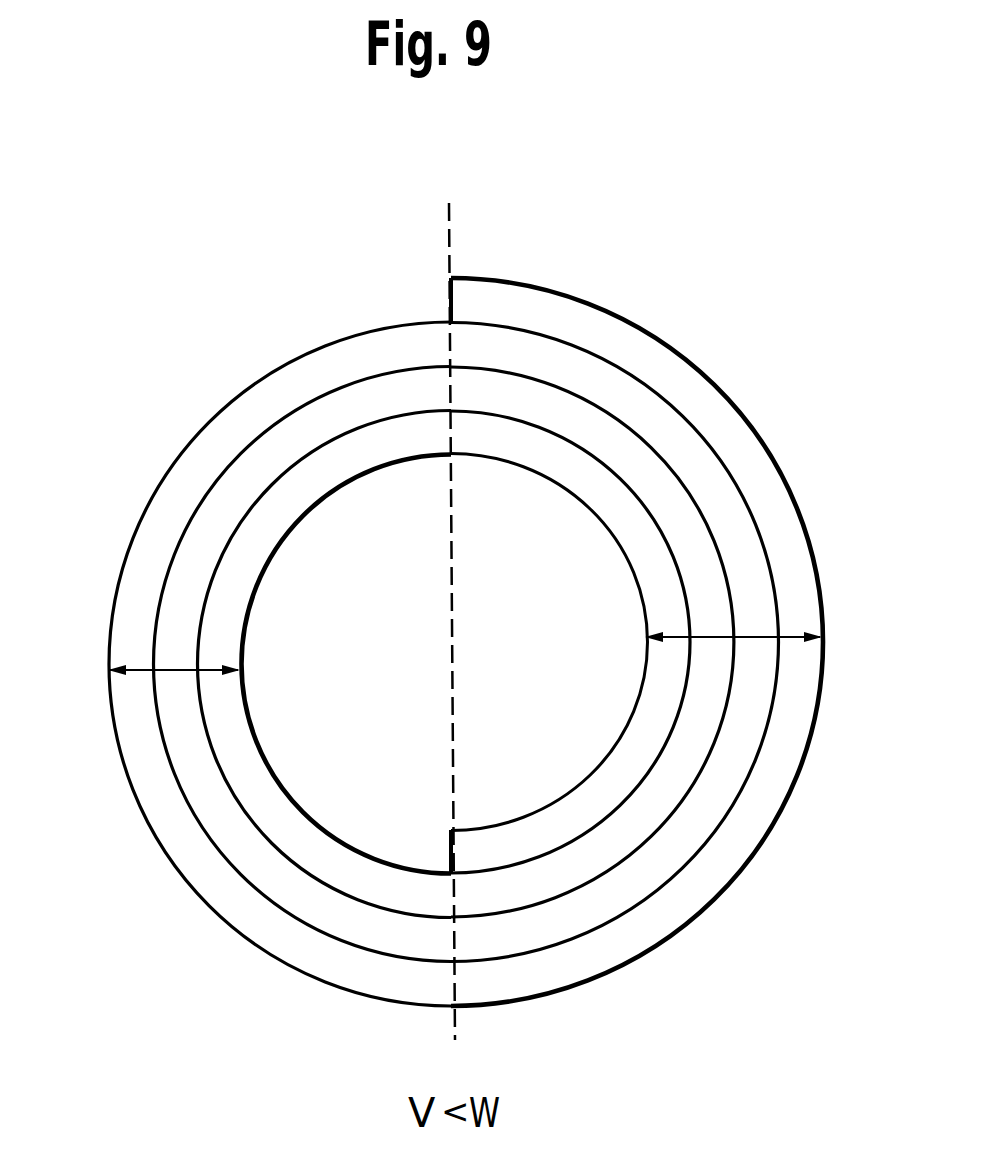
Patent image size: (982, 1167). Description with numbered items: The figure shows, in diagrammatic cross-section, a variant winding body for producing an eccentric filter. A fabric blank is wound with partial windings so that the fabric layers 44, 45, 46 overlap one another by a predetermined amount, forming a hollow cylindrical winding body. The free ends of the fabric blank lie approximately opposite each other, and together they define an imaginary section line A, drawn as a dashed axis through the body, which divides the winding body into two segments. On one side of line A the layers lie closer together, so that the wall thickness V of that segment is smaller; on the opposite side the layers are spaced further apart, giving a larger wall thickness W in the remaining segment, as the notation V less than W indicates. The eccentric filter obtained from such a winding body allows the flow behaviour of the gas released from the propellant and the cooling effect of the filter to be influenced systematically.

The fabric layer 44 is at (242, 563).
The fabric layer 45 is at (290, 437).
The fabric layer 46 is at (192, 473).
The line A is at (448, 232).
The wall thickness V is at (175, 670).
The wall thickness W is at (745, 637).